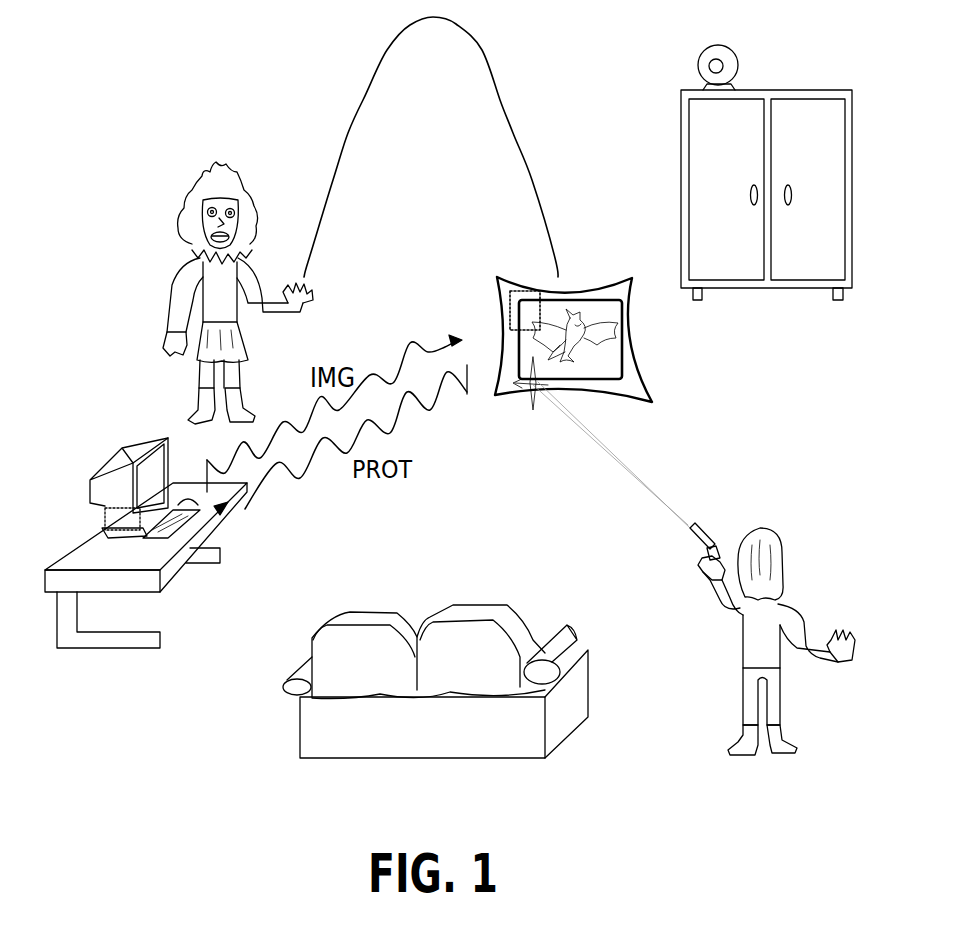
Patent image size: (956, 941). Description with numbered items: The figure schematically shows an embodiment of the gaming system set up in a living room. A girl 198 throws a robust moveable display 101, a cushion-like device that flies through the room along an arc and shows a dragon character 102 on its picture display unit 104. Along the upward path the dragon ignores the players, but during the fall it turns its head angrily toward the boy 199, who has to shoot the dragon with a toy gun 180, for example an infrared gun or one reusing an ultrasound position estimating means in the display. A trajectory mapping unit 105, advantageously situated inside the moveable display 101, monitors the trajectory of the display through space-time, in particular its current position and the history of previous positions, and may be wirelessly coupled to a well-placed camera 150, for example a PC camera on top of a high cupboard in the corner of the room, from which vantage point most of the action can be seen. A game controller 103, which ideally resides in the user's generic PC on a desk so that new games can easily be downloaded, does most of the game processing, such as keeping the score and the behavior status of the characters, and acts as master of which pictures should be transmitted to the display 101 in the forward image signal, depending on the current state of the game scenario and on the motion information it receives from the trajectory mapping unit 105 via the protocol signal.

The moveable display 101 is at (645, 386).
The dragon character 102 is at (580, 307).
The game controller 103 is at (105, 515).
The picture display unit 104 is at (600, 370).
The trajectory mapping unit 105 is at (510, 300).
The camera 150 is at (740, 68).
The toy gun 180 is at (683, 535).
The girl 198 is at (178, 287).
The boy 199 is at (785, 728).